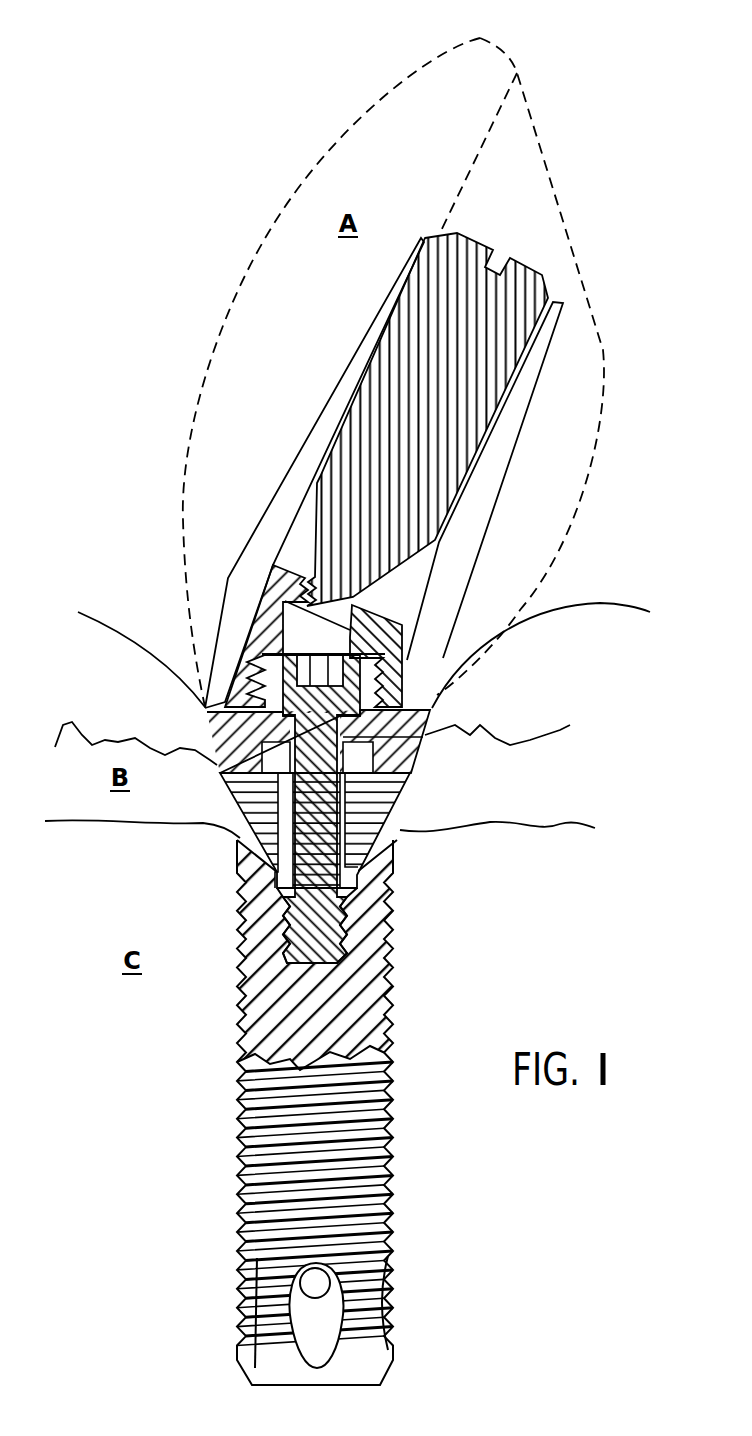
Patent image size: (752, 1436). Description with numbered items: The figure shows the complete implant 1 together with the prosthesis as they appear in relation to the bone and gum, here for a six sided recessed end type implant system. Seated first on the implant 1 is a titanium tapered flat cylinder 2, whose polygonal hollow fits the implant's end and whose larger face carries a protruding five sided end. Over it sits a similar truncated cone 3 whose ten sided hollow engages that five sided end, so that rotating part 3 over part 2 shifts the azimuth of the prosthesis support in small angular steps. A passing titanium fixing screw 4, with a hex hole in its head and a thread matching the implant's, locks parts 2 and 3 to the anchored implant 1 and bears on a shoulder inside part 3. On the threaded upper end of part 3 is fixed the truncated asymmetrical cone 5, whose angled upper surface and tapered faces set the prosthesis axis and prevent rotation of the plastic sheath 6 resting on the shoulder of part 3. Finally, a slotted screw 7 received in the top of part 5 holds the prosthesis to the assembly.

The implant 1 is at (373, 987).
The tapered flat cylinder 2 is at (402, 798).
The truncated cone 3 is at (425, 733).
The fixing screw 4 is at (400, 770).
The truncated asymmetrical cone 5 is at (403, 643).
The plastic sheath 6 is at (467, 517).
The slotted screw 7 is at (473, 400).